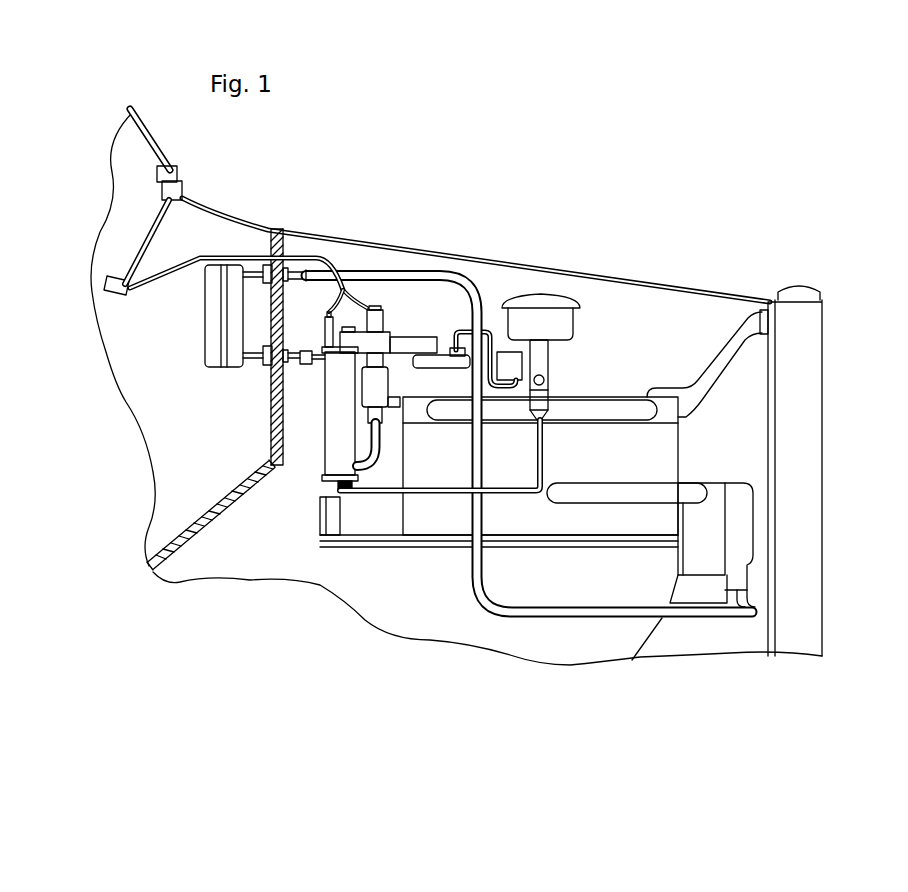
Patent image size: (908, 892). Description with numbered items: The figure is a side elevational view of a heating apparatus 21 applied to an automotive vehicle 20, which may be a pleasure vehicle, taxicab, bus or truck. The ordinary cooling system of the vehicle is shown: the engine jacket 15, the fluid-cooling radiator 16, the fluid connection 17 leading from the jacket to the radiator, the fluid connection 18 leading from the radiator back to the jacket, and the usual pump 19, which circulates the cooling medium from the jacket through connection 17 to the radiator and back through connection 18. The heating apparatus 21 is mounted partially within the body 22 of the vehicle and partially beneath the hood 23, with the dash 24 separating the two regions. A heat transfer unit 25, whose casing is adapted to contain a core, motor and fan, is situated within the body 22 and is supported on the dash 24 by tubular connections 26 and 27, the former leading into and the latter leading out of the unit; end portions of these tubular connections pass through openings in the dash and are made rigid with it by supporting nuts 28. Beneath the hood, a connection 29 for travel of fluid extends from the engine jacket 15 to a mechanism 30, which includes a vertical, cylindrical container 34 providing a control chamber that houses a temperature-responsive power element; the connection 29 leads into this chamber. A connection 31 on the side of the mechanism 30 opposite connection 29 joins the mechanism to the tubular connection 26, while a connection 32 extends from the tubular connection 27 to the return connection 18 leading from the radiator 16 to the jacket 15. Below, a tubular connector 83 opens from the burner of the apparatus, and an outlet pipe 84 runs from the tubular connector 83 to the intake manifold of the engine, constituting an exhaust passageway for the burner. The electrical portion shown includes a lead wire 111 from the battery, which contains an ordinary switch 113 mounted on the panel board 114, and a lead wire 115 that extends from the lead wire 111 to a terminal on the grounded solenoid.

The engine jacket 15 is at (667, 456).
The fluid-cooling radiator 16 is at (806, 567).
The fluid connection from the jacket to the radiator 17 is at (712, 366).
The fluid connection from the radiator to the jacket 18 is at (740, 598).
The pump 19 is at (737, 505).
The automotive vehicle 20 is at (289, 566).
The heating apparatus 21 is at (322, 457).
The body 22 is at (156, 508).
The hood 23 is at (638, 283).
The dash 24 is at (268, 428).
The heat transfer unit 25 is at (213, 341).
The tubular connection 26 is at (252, 360).
The tubular connection 27 is at (259, 282).
The supporting nuts 28 is at (280, 283).
The connection 29 is at (397, 397).
The mechanism 30 is at (330, 408).
The connection 31 is at (313, 365).
The connection 32 is at (466, 300).
The vertical cylindrical container 34 is at (380, 384).
The tubular connector 83 is at (337, 486).
The outlet pipe 84 is at (413, 490).
The lead wire 111 is at (196, 262).
The switch 113 is at (114, 291).
The panel board 114 is at (152, 223).
The lead wire 115 is at (368, 306).